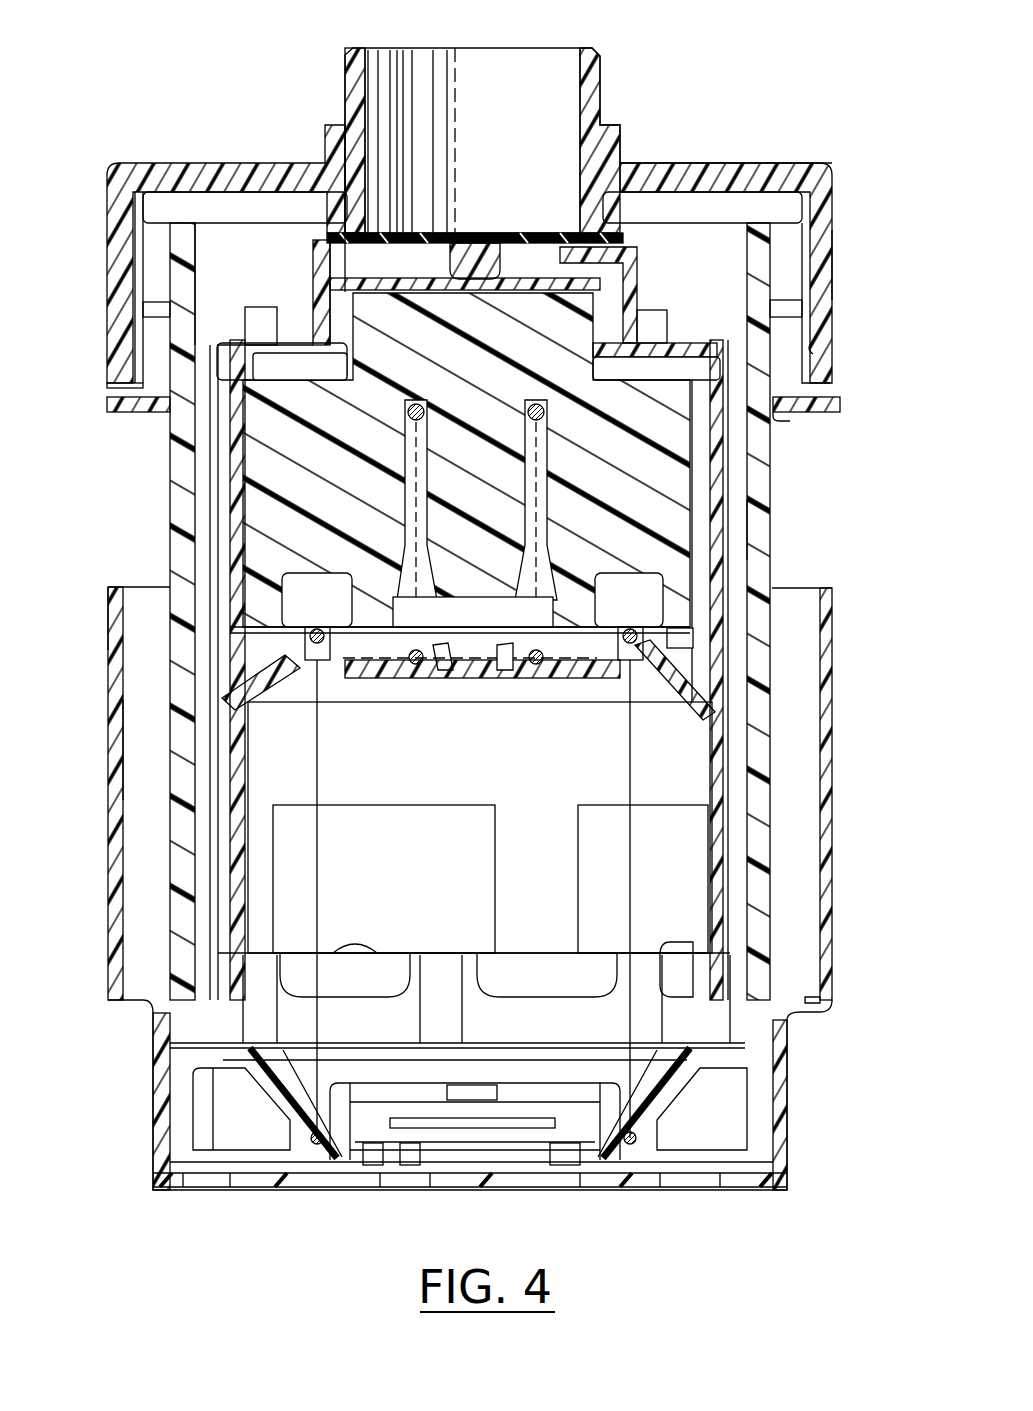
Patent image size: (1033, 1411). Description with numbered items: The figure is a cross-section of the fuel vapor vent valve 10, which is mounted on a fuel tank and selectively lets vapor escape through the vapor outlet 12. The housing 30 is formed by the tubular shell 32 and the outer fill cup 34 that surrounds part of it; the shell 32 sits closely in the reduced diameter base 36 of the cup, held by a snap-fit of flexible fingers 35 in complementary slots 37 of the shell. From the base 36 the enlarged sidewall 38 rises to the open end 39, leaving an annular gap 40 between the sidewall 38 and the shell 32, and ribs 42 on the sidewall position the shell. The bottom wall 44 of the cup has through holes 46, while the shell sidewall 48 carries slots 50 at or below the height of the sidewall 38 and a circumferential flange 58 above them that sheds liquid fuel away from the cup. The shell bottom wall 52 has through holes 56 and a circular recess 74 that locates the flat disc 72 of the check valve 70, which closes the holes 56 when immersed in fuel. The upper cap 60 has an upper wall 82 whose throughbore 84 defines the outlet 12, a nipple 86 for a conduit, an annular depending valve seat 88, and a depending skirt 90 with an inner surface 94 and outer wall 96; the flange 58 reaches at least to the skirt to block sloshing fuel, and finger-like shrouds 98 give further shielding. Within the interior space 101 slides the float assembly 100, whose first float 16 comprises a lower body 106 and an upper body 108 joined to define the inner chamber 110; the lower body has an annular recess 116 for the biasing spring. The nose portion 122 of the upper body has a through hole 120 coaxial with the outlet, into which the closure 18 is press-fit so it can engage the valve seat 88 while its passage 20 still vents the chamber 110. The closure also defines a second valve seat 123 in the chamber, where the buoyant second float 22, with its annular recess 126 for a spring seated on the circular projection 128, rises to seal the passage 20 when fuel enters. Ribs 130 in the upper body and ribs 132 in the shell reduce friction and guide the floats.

The fuel vapor vent valve 10 is at (787, 36).
The vapor outlet 12 is at (518, 68).
The first float 16 is at (640, 274).
The closure 18 is at (524, 233).
The passage 20 is at (486, 241).
The second float 22 is at (696, 455).
The housing 30 is at (858, 400).
The shell 32 is at (774, 482).
The fill cup 34 is at (835, 878).
The flexible fingers 35 is at (178, 1133).
The base 36 is at (790, 1100).
The slots 37 is at (175, 1110).
The sidewall 38 is at (135, 758).
The open end 39 is at (128, 577).
The annular gap 40 is at (132, 685).
The ribs 42 is at (806, 1003).
The bottom wall 44 is at (703, 1188).
The through holes 46 is at (555, 1165).
The sidewall 48 is at (768, 533).
The slots 50 is at (400, 957).
The bottom wall 52 is at (668, 1098).
The through holes 56 is at (440, 1095).
The flange 58 is at (838, 408).
The upper cap 60 is at (104, 252).
The check valve 70 is at (527, 1144).
The disc 72 is at (485, 1130).
The circular recess 74 is at (372, 1147).
The upper wall 82 is at (788, 165).
The throughbore 84 is at (368, 85).
The nipple 86 is at (603, 82).
The valve seat 88 is at (245, 207).
The skirt 90 is at (836, 238).
The inner surface 94 is at (814, 350).
The outer wall 96 is at (833, 278).
The shrouds 98 is at (107, 352).
The float assembly 100 is at (208, 477).
The interior space 101 is at (210, 525).
The lower body 106 is at (696, 758).
The upper body 108 is at (720, 697).
The inner chamber 110 is at (700, 672).
The annular recess 116 is at (630, 652).
The through hole 120 is at (456, 232).
The nose portion 122 is at (305, 303).
The second valve seat 123 is at (440, 289).
The annular recess 126 is at (405, 598).
The circular projection 128 is at (447, 670).
The ribs 130 is at (690, 637).
The ribs 132 is at (420, 1022).